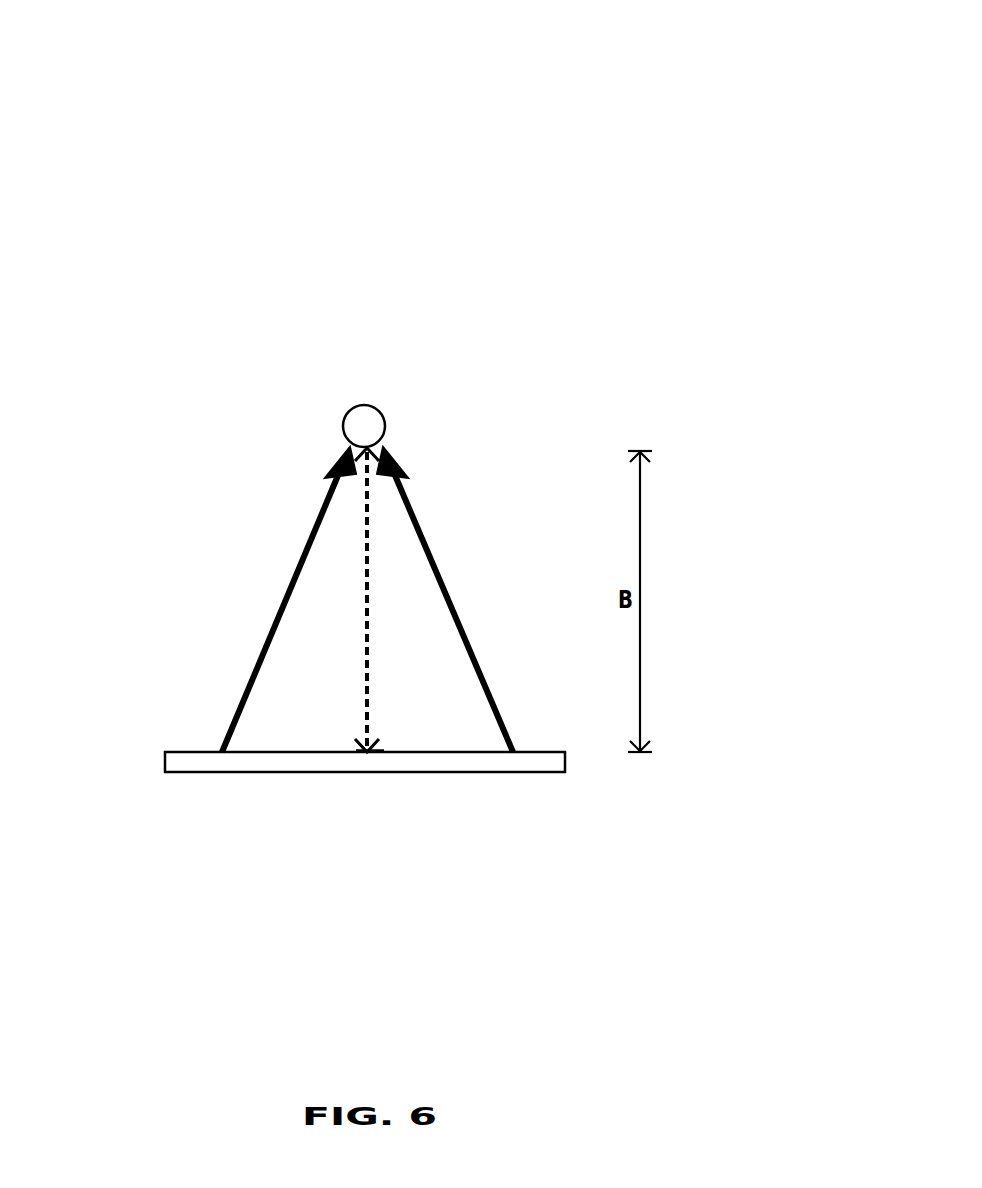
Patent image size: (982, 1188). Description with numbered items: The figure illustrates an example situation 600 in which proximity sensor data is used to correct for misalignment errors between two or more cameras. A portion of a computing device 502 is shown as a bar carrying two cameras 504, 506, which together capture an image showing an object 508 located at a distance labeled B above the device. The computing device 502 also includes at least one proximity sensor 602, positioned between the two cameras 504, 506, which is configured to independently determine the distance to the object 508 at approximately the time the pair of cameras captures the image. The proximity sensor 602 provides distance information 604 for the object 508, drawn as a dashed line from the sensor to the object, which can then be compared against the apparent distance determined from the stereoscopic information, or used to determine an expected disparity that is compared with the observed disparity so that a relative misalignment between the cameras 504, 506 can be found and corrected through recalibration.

The example situation 600 is at (708, 86).
The computing device 502 is at (165, 765).
The camera 504 is at (222, 752).
The camera 506 is at (513, 752).
The object 508 is at (385, 427).
The proximity sensor 602 is at (378, 755).
The distance information 604 is at (370, 638).